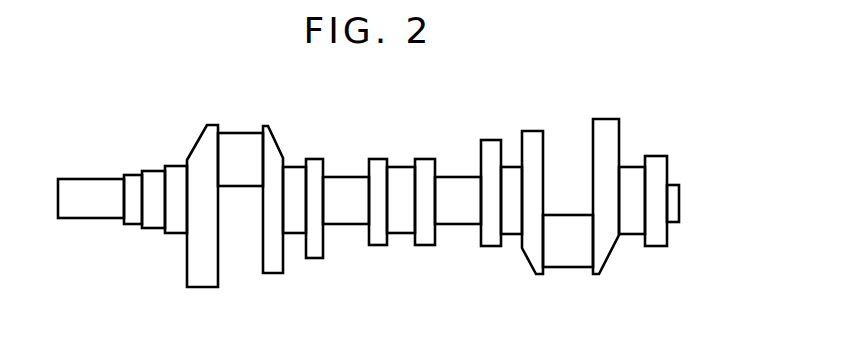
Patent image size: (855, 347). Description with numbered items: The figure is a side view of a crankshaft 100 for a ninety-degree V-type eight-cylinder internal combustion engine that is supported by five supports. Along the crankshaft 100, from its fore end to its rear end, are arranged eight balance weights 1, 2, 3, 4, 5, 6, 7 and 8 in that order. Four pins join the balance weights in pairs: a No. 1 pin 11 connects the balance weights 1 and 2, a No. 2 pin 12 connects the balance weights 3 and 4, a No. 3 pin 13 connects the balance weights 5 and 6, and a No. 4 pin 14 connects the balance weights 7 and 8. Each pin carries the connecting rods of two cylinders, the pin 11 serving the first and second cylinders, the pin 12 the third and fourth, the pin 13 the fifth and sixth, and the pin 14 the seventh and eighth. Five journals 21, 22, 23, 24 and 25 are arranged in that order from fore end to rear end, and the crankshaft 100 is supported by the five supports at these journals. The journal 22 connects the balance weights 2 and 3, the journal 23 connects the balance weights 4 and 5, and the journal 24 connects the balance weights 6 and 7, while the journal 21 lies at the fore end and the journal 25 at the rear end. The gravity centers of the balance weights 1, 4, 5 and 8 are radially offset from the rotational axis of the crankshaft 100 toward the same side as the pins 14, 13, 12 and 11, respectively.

The crankshaft 100 is at (377, 199).
The No. 1 balance weight 1 is at (203, 284).
The No. 2 balance weight 2 is at (273, 270).
The No. 3 balance weight 3 is at (315, 258).
The No. 4 balance weight 4 is at (378, 244).
The No. 5 balance weight 5 is at (427, 162).
The No. 6 balance weight 6 is at (495, 142).
The No. 7 balance weight 7 is at (533, 132).
The No. 8 balance weight 8 is at (605, 119).
The No. 1 pin 11 is at (238, 133).
The No. 2 pin 12 is at (347, 176).
The No. 3 pin 13 is at (458, 223).
The No. 4 pin 14 is at (565, 264).
The No. 1 journal 21 is at (178, 168).
The No. 2 journal 22 is at (295, 228).
The No. 3 journal 23 is at (403, 231).
The No. 4 journal 24 is at (511, 231).
The No. 5 journal 25 is at (631, 231).